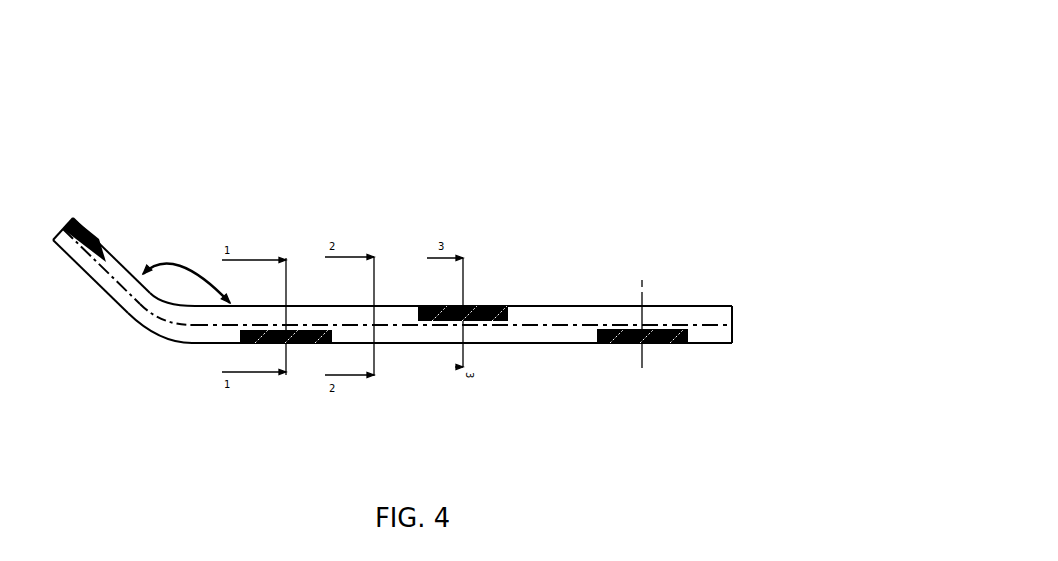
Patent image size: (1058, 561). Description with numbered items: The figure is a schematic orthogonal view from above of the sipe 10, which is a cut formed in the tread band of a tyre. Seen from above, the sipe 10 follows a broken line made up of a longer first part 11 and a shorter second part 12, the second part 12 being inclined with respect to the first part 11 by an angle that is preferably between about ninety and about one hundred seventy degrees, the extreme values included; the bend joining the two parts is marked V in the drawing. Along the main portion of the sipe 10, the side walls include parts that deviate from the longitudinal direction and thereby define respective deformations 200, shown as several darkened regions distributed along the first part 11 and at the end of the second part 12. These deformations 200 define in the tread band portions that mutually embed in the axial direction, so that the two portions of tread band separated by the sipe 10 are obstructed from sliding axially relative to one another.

The sipe 10 is at (612, 190).
The first part 11 is at (503, 347).
The second part 12 is at (96, 296).
The bend vertex V is at (178, 352).
The deformation 200 is at (100, 238).